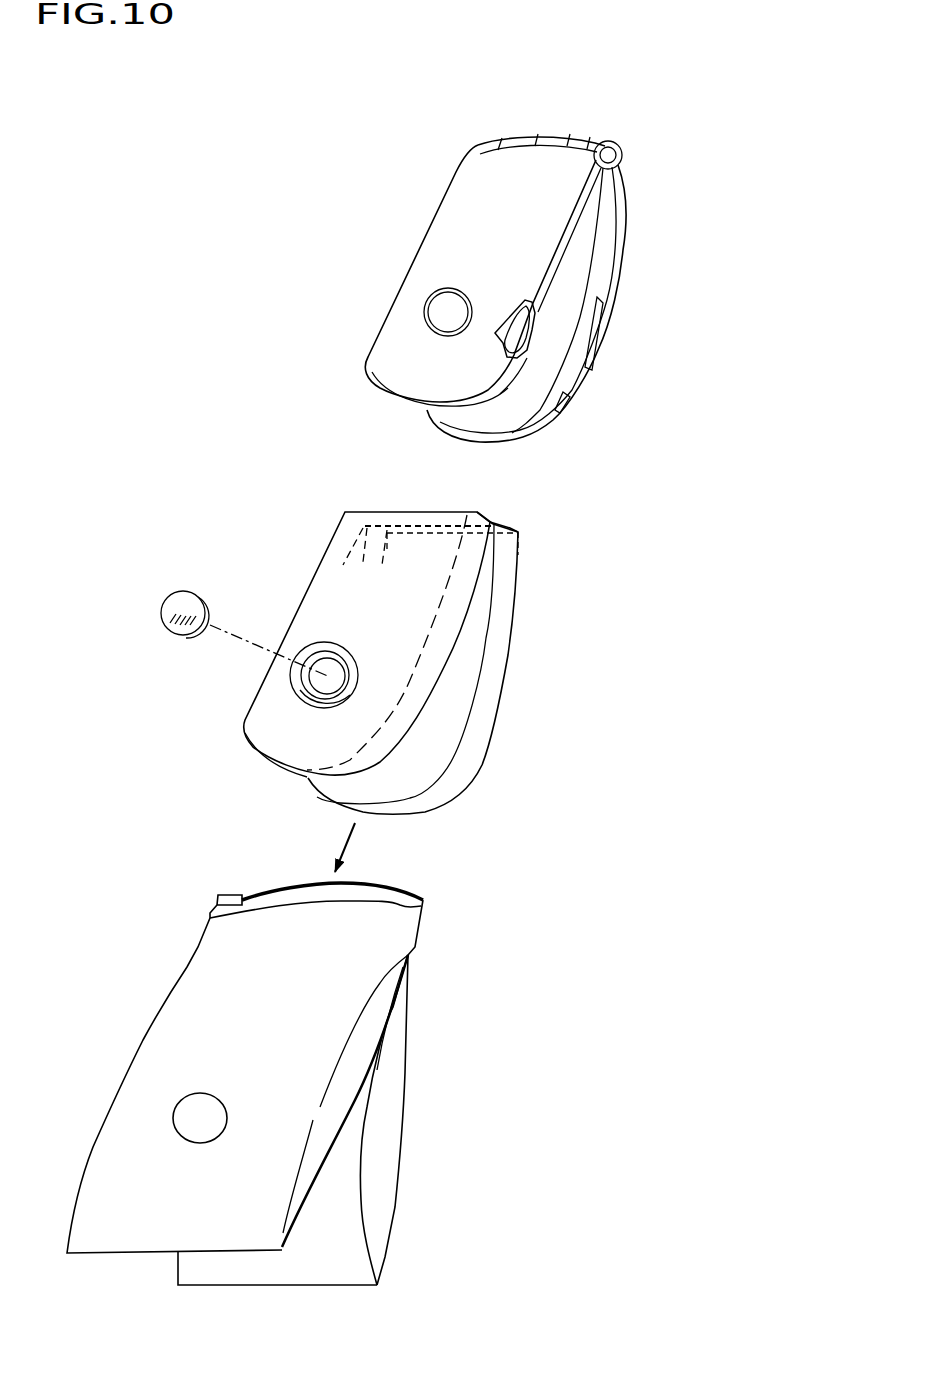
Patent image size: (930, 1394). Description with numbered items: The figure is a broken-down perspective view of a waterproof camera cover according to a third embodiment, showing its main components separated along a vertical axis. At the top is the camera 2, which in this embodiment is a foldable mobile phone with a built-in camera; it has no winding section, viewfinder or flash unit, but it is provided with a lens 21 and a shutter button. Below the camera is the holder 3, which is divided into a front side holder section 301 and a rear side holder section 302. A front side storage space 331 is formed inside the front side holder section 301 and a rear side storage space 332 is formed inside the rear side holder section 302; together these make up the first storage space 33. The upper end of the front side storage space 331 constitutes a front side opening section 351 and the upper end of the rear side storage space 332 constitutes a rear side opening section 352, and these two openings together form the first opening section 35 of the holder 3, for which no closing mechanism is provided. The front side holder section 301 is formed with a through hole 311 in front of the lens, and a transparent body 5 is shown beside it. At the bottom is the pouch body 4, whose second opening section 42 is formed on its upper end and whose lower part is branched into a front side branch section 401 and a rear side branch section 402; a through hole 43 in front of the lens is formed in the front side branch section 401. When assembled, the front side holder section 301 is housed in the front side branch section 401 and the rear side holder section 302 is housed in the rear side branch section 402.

The camera 2 is at (672, 168).
The lens 21 is at (435, 308).
The holder 3 is at (237, 542).
The front side holder section 301 is at (277, 723).
The rear side holder section 302 is at (497, 717).
The through hole 311 is at (310, 660).
The first storage space 33 is at (621, 459).
The front side storage space 331 is at (492, 514).
The rear side storage space 332 is at (514, 525).
The first opening section 35 is at (427, 462).
The front side opening section 351 is at (372, 518).
The rear side opening section 352 is at (420, 520).
The transparent body 5 is at (172, 608).
The pouch body 4 is at (464, 943).
The second opening section 42 is at (393, 884).
The through hole 43 is at (175, 1120).
The front side branch section 401 is at (328, 1137).
The rear side branch section 402 is at (389, 1090).